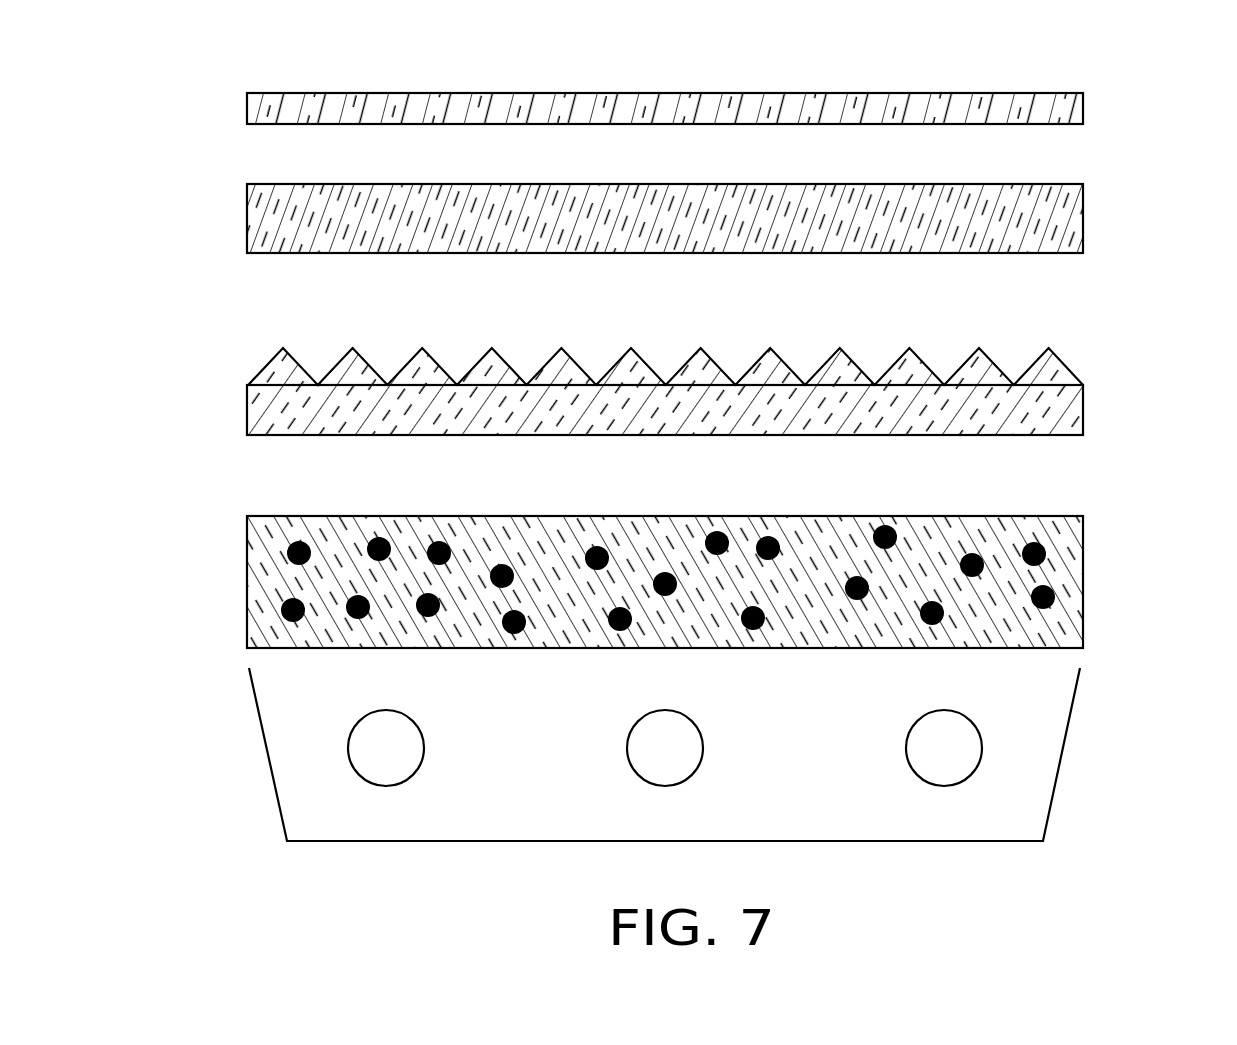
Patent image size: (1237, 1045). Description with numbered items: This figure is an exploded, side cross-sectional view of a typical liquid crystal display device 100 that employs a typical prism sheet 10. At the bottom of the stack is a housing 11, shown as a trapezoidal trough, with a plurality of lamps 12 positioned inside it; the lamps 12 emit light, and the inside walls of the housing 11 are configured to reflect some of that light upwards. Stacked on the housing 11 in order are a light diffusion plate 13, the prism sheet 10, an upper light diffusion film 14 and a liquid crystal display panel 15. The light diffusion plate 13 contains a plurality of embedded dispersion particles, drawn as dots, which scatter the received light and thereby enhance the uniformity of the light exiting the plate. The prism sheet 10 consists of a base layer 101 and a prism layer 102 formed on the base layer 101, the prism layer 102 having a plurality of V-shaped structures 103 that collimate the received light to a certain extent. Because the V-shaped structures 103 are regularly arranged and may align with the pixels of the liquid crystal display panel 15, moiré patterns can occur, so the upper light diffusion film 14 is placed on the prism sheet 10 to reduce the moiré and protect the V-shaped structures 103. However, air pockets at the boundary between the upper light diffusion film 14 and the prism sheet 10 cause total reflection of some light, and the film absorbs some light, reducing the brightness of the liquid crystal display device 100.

The liquid crystal display device 100 is at (812, 70).
The liquid crystal display panel 15 is at (1083, 101).
The upper light diffusion film 14 is at (1083, 215).
The prism sheet 10 is at (718, 391).
The base layer 101 is at (695, 435).
The prism layer 102 is at (1055, 372).
The V-shaped structures 103 is at (923, 360).
The light diffusion plate 13 is at (1070, 594).
The housing 11 is at (1071, 729).
The lamps 12 is at (952, 770).